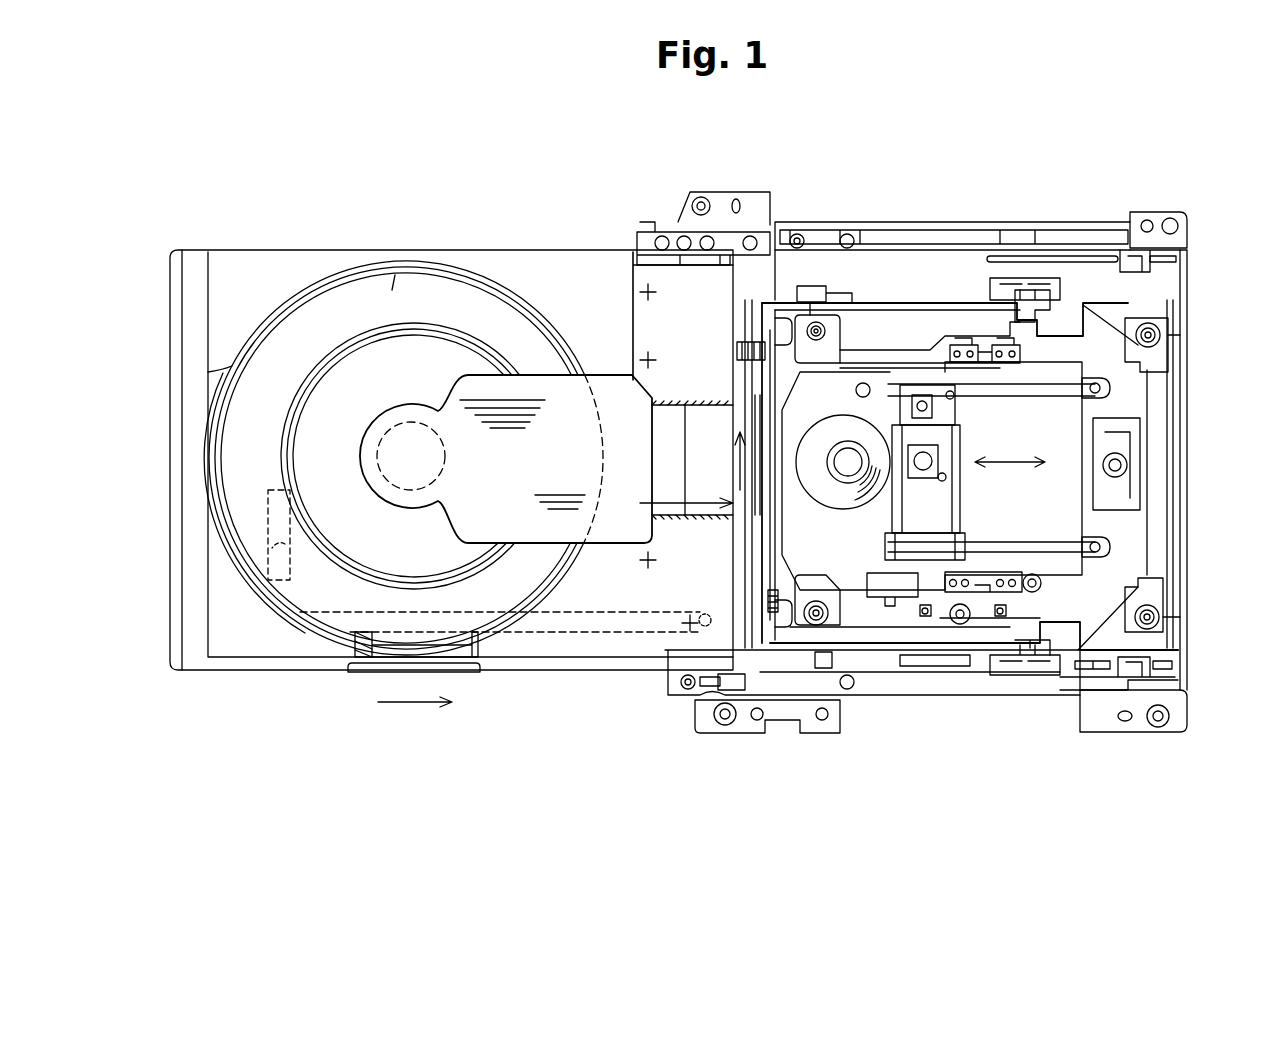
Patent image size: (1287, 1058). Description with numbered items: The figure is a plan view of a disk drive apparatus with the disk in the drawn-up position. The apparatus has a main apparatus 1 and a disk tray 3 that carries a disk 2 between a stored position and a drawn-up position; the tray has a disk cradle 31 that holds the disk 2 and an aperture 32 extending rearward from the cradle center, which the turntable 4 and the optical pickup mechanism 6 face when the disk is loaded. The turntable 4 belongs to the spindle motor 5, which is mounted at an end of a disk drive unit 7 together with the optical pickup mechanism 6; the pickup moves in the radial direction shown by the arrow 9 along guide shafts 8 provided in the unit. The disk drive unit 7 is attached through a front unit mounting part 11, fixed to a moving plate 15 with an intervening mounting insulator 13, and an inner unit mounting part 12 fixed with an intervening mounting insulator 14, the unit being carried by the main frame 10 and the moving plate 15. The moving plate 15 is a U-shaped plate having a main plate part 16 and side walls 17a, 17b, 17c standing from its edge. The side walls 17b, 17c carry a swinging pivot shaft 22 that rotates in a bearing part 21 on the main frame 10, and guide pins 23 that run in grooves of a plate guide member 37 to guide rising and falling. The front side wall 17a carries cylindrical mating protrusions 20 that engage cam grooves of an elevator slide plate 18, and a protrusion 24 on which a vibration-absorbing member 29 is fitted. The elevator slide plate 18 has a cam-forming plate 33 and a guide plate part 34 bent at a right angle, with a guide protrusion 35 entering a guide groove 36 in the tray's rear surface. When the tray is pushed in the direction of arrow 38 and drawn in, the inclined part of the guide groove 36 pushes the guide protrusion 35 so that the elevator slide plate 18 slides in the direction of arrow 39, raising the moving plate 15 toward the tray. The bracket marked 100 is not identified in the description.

The main apparatus 1 is at (980, 215).
The disk 2 is at (375, 275).
The disk tray 3 is at (243, 252).
The turntable 4 is at (830, 438).
The spindle motor 5 is at (848, 468).
The optical pickup mechanism 6 is at (945, 497).
The disk drive unit 7 is at (1065, 368).
The guide shaft 8 is at (1052, 392).
The arrow 9 is at (1003, 460).
The main frame 10 is at (983, 695).
The unit mounting part 11 is at (835, 320).
The unit mounting part 12 is at (1168, 335).
The mounting insulator 13 is at (780, 730).
The mounting insulator 14 is at (1148, 330).
The moving plate 15 is at (900, 280).
The main plate part 16 is at (912, 312).
The side wall 17a is at (772, 522).
The side wall 17b is at (953, 308).
The side wall 17c is at (940, 648).
The elevator slide plate 18 is at (670, 498).
The mating protrusion 20 is at (755, 404).
The bearing part 21 is at (1045, 290).
The swinging pivot shaft 22 is at (1027, 290).
The guide pin 23 is at (847, 235).
The protrusion 24 is at (760, 352).
The vibration-absorbing member 29 is at (775, 325).
The disk cradle 31 is at (470, 300).
The aperture 32 is at (548, 540).
The cam-forming plate 33 is at (765, 430).
The guide plate part 34 is at (737, 615).
The guide protrusion 35 is at (695, 605).
The guide groove 36 is at (553, 636).
The plate guide member 37 is at (800, 235).
The arrow 38 is at (414, 703).
The arrow 39 is at (740, 466).
The disc apparatus 100 is at (1050, 170).